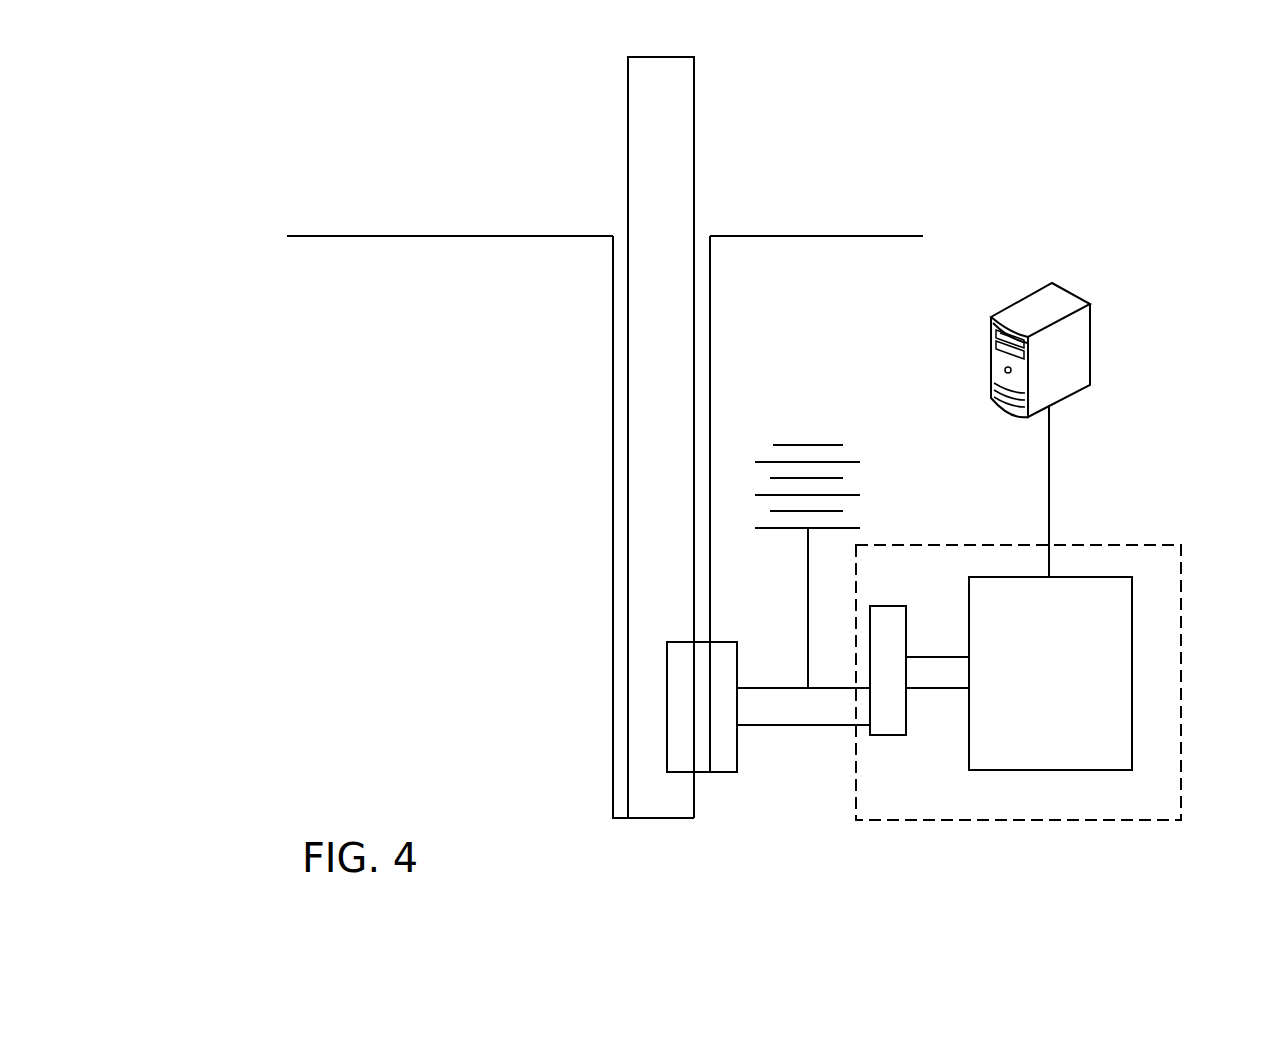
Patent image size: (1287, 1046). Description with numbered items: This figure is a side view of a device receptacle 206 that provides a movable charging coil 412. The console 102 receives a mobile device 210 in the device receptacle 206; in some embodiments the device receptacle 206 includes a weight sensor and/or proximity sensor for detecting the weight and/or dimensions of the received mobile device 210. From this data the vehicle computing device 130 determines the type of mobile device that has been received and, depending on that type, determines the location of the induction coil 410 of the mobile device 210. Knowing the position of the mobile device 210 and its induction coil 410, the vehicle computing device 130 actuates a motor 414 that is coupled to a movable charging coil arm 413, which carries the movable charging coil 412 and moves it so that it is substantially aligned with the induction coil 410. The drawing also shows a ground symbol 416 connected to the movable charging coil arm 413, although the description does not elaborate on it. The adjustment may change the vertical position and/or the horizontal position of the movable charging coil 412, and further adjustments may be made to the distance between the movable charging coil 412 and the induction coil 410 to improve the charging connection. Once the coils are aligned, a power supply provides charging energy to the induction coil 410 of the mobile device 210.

The console 102 is at (605, 180).
The mobile device 210 is at (700, 421).
The device receptacle 206 is at (611, 569).
The induction coil 410 is at (720, 752).
The movable charging coil 412 is at (749, 657).
The movable charging coil arm 413 is at (803, 763).
The ground 416 is at (817, 507).
The motor 414 is at (1053, 630).
The vehicle computing device 130 is at (1090, 384).